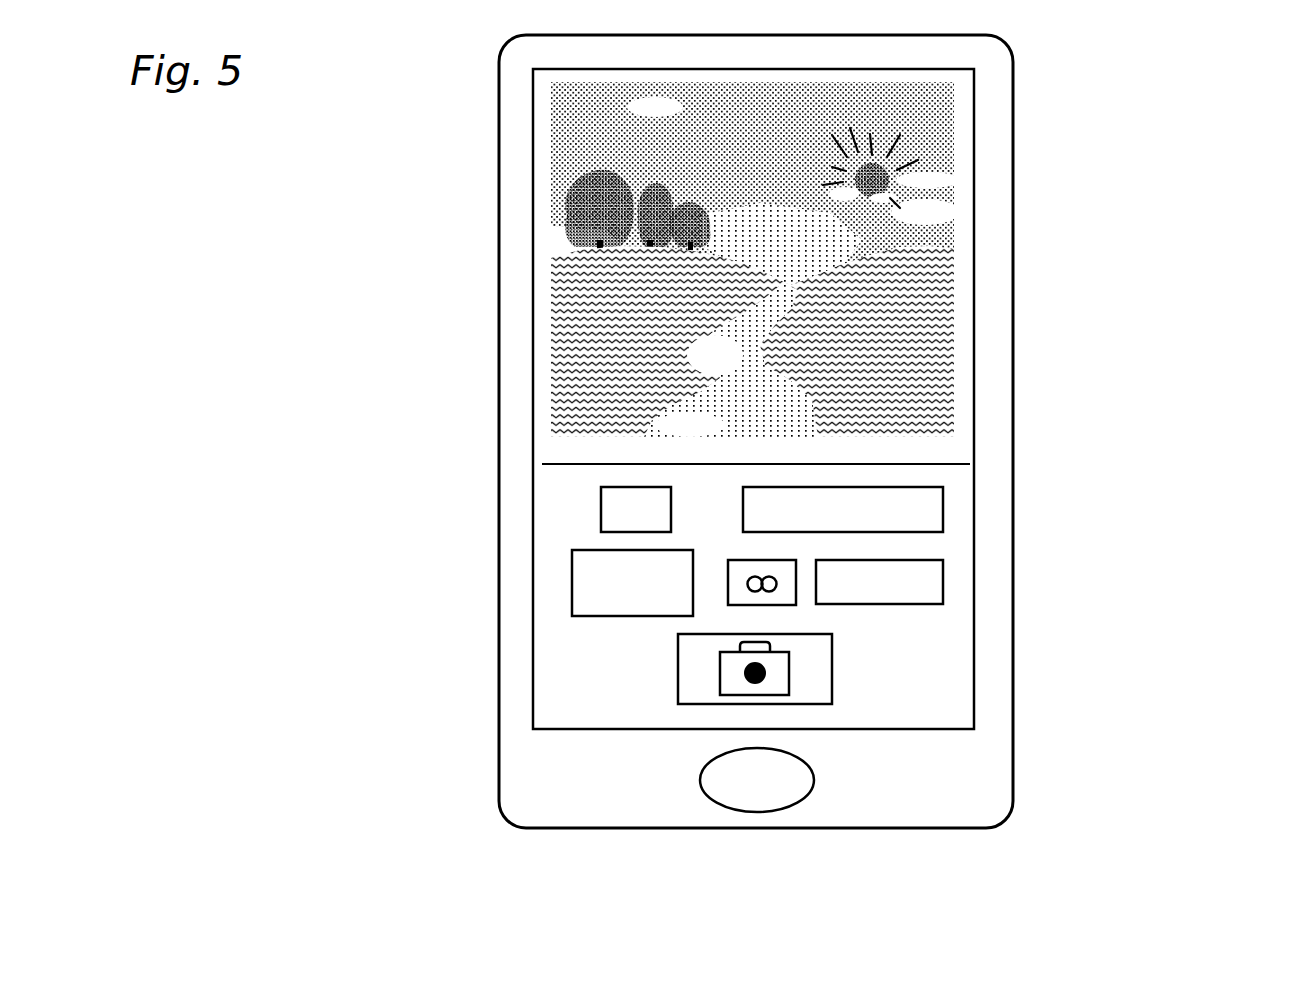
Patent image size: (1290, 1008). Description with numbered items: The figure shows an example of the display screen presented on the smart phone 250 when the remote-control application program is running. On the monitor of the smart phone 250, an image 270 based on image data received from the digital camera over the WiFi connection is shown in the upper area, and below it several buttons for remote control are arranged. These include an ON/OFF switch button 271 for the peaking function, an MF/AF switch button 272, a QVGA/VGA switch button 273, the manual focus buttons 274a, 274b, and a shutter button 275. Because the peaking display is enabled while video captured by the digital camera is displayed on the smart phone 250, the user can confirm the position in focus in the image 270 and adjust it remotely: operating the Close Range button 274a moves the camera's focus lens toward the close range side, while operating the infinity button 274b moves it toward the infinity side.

The smart phone 250 is at (910, 828).
The image 270 is at (916, 193).
The ON/OFF switch button for the peaking function 271 is at (917, 495).
The MF/AF switch button 272 is at (612, 508).
The QVGA/VGA switch button 273 is at (935, 566).
The Close Range button 274a is at (608, 615).
The ∞ button 274b is at (730, 606).
The shutter button 275 is at (805, 668).